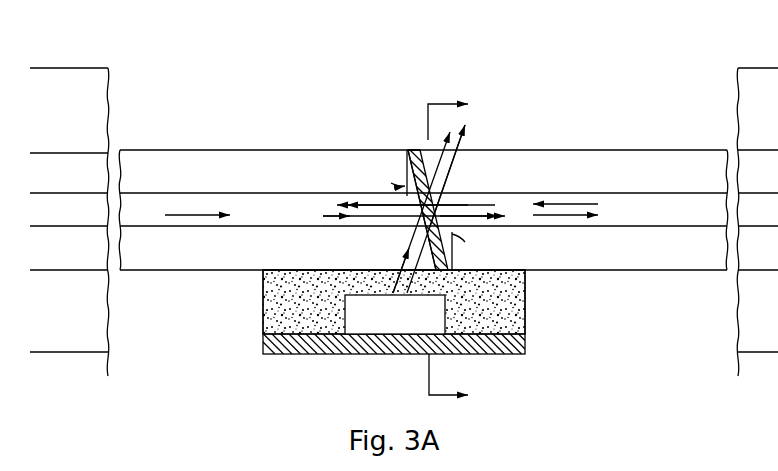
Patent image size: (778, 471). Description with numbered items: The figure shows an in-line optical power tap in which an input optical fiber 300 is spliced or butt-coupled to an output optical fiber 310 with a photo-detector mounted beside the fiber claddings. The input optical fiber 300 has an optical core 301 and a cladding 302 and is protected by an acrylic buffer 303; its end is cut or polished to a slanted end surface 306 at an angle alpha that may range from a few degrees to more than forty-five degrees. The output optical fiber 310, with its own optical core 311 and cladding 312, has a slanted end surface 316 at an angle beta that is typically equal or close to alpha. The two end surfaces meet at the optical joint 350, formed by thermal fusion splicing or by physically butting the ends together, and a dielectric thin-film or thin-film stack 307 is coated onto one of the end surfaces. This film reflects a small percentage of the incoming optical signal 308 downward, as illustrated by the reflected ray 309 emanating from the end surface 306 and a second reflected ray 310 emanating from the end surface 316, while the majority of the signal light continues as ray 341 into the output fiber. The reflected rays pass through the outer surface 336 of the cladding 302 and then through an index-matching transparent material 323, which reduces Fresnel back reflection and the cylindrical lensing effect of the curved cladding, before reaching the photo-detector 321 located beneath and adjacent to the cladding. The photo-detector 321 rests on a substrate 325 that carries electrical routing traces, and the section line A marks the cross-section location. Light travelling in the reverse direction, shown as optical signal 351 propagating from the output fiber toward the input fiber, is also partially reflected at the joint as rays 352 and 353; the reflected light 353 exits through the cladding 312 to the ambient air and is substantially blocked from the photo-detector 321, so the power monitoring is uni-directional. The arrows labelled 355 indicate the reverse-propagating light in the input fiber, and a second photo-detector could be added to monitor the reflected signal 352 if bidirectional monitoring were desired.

The input optical fiber 300 is at (215, 123).
The optical core 301 is at (253, 208).
The cladding 302 is at (165, 166).
The acrylic buffer 303 is at (92, 66).
The slanted end surface of the input fiber 306 is at (408, 167).
The thin-film stack 307 is at (407, 149).
The incoming optical signal 308 is at (371, 218).
The reflected ray 309 is at (393, 269).
The output optical fiber 310 is at (598, 125).
The optical core 311 is at (627, 208).
The cladding 312 is at (668, 166).
The slanted end surface of the output fiber 316 is at (426, 170).
The photo-detector 321 is at (343, 310).
The index-matching transparent material 323 is at (513, 298).
The substrate 325 is at (528, 344).
The outer surface of the cladding 336 is at (274, 272).
The transmitted ray 341 is at (485, 220).
The optical joint 350 is at (402, 117).
The reverse optical signal 351 is at (494, 200).
The reflected ray of reverse signal 352 is at (458, 175).
The reflected ray of reverse signal 353 is at (424, 202).
The backward propagating light 355 is at (367, 200).